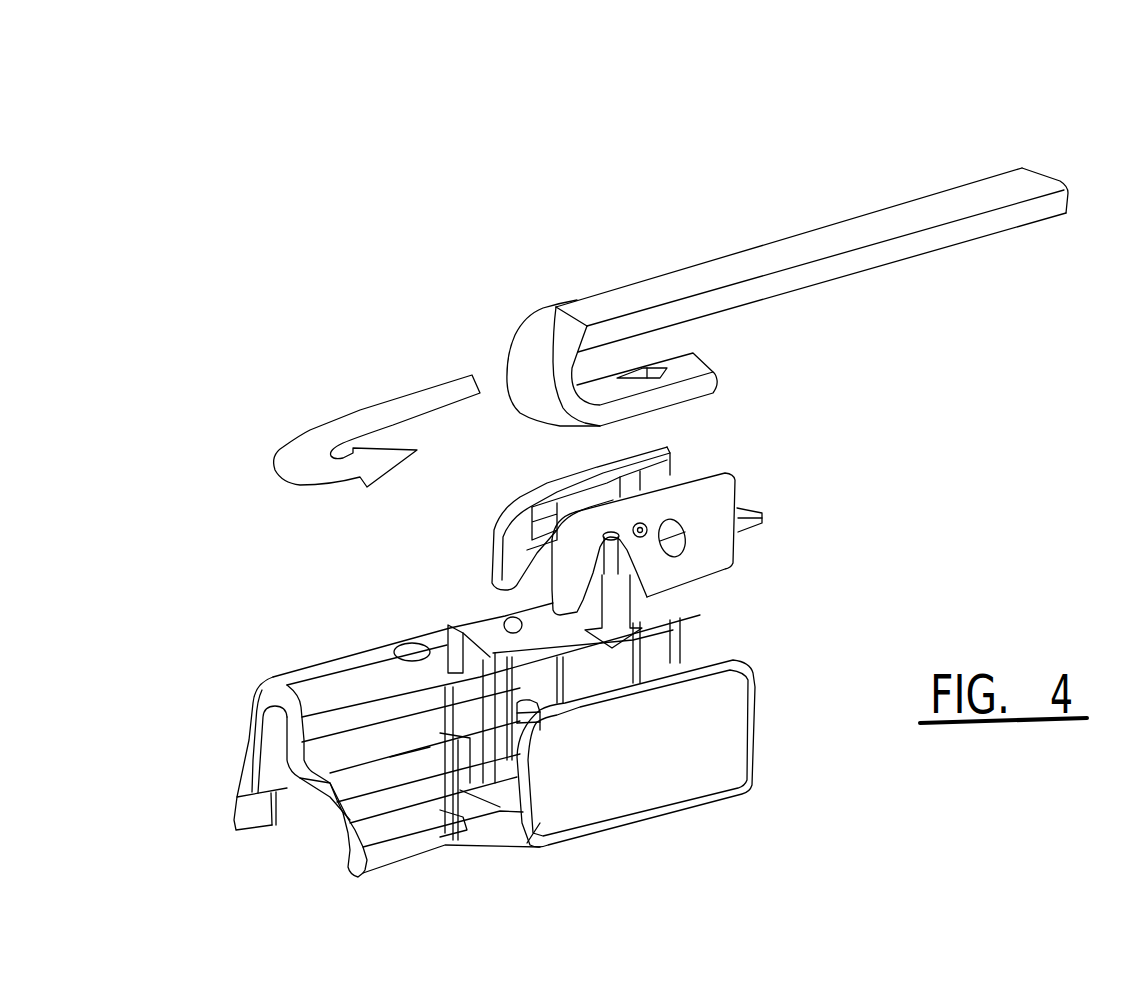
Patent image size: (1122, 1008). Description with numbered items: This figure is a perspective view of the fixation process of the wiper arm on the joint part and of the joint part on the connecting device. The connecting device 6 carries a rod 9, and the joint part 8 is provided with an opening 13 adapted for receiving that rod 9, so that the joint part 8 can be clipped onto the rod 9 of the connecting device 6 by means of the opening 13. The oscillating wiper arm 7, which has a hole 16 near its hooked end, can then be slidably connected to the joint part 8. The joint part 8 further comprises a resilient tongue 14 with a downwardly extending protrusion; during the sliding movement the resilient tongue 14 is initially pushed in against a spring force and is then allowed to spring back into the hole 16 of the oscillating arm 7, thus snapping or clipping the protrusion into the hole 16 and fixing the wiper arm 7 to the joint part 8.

The connecting device 6 is at (240, 618).
The oscillating wiper arm 7 is at (650, 180).
The joint part 8 is at (797, 428).
The rod 9 is at (530, 713).
The opening 13 is at (622, 548).
The resilient tongue 14 is at (767, 523).
The hole 16 is at (697, 353).